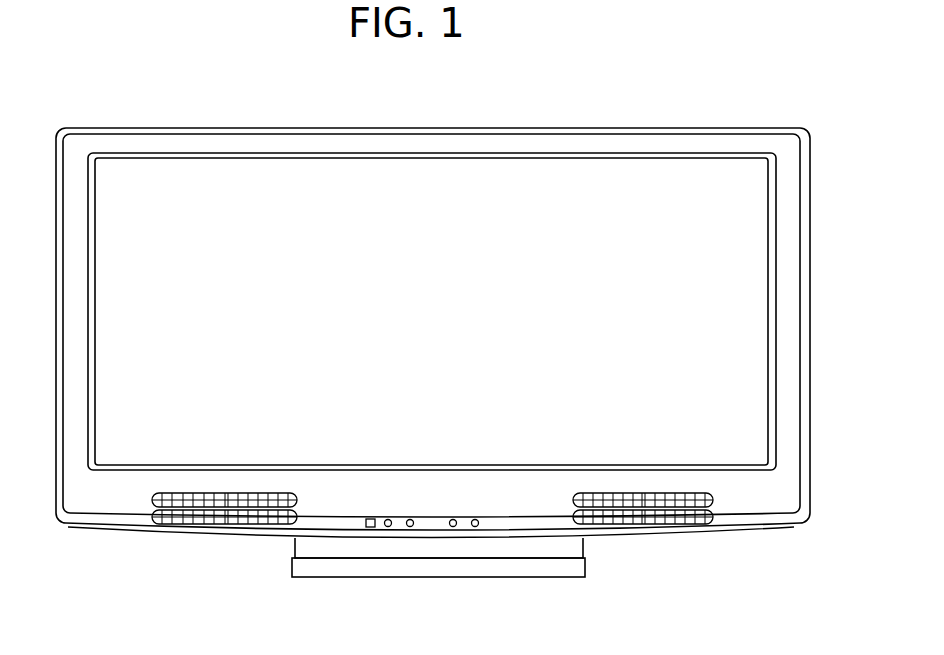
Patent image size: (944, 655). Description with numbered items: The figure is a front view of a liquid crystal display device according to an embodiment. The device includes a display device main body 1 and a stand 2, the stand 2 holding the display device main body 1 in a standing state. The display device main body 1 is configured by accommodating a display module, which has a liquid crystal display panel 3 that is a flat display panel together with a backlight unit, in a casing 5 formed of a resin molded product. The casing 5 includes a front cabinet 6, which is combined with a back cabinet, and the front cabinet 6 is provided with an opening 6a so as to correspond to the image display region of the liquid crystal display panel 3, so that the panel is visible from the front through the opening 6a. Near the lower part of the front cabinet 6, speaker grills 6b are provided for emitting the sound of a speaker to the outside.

The display device main body 1 is at (810, 192).
The stand 2 is at (430, 562).
The liquid crystal display panel 3 is at (308, 180).
The casing 5 is at (625, 132).
The front cabinet 6 is at (787, 402).
The opening 6a is at (772, 287).
The speaker grill 6b is at (193, 520).